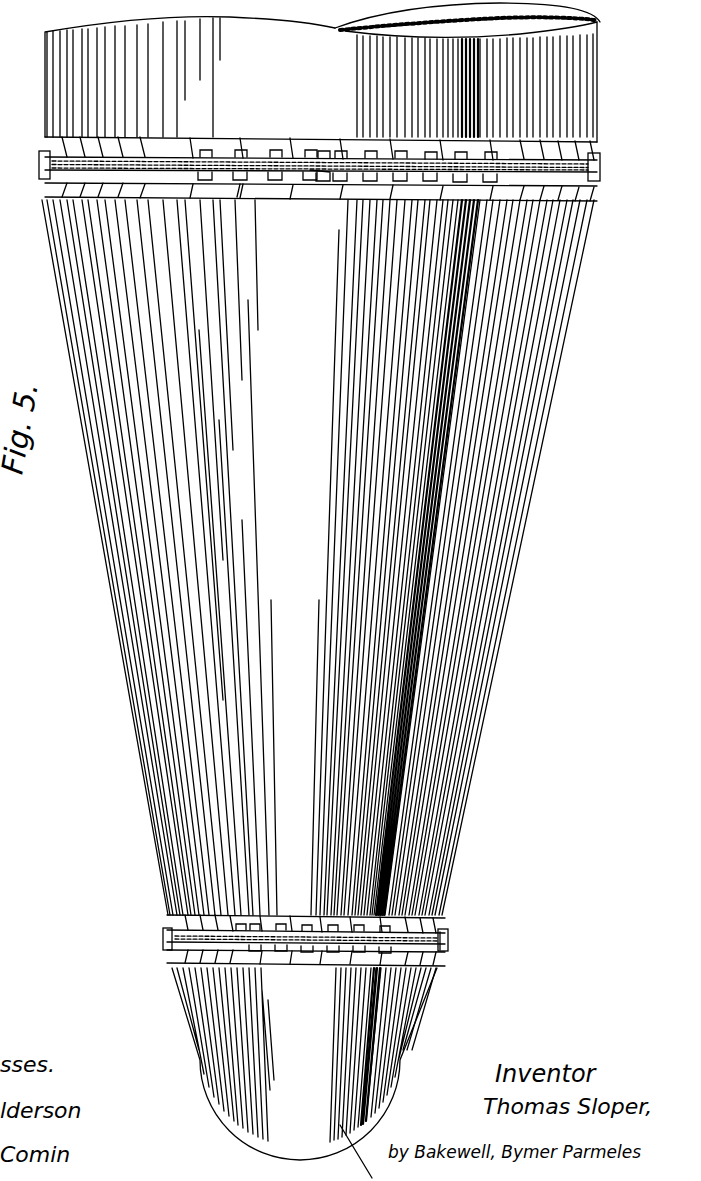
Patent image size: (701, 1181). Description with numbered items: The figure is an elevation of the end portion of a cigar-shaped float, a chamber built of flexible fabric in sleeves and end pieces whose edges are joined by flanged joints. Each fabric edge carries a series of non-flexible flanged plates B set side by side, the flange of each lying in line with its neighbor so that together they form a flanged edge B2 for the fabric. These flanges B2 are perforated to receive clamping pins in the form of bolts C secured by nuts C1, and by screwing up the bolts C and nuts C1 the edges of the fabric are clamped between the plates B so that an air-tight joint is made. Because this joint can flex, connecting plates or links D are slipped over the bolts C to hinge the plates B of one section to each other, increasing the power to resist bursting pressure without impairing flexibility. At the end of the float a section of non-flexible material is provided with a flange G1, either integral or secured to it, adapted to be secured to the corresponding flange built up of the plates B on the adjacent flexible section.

The flanged plates B is at (212, 147).
The bolts C is at (298, 152).
The connecting plates or links D is at (320, 155).
The flanged edge B2 is at (230, 200).
The nuts C1 is at (315, 200).
The flange G1 is at (447, 937).